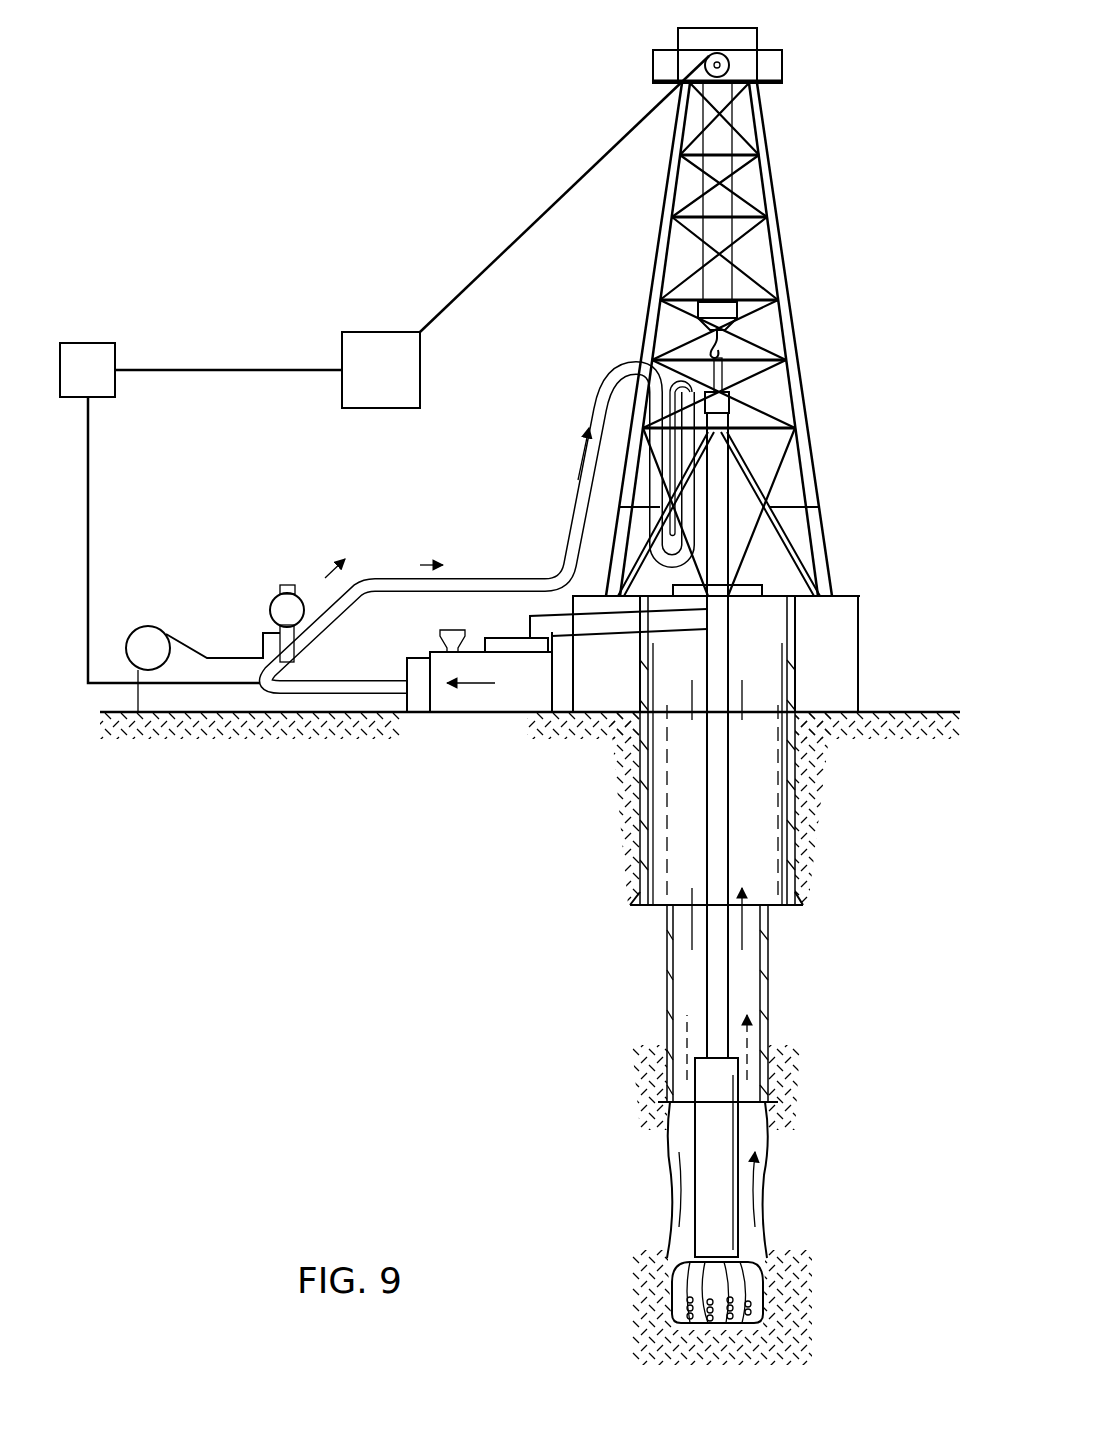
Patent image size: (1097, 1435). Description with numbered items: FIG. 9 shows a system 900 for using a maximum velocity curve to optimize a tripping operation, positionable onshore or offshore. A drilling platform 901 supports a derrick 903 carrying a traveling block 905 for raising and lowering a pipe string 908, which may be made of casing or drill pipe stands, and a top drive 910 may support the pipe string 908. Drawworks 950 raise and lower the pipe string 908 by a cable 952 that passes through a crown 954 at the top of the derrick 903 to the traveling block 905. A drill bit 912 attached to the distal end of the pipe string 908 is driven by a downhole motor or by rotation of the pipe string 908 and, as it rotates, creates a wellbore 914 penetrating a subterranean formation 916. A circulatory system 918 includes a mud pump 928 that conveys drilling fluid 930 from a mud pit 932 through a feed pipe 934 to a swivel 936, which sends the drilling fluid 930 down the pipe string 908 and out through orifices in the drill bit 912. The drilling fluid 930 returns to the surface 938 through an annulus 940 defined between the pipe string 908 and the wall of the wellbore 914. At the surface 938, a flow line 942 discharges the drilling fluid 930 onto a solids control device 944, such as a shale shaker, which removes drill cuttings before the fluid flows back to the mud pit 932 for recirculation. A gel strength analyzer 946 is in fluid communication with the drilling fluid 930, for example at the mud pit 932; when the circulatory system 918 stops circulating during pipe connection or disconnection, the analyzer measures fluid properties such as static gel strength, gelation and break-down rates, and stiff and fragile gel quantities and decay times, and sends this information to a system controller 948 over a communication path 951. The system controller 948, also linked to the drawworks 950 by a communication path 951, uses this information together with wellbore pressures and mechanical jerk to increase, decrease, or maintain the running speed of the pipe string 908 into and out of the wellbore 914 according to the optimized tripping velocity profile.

The system 900 is at (223, 85).
The crown 954 is at (757, 42).
The derrick 903 is at (794, 110).
The cable 952 is at (541, 174).
The traveling block 905 is at (740, 300).
The swivel 936 is at (735, 395).
The top drive 910 is at (745, 490).
The drilling platform 901 is at (830, 596).
The system controller 948 is at (80, 343).
The communication path 951 is at (227, 336).
The drawworks 950 is at (380, 332).
The feed pipe 934 is at (381, 577).
The solids control device 944 is at (490, 638).
The flow line 942 is at (565, 607).
The circulatory system 918 is at (155, 606).
The mud pump 928 is at (238, 658).
The gel strength analyzer 946 is at (418, 658).
The surface 938 is at (905, 712).
The drilling fluid 930 is at (470, 685).
The mud pit 932 is at (500, 705).
The subterranean formation 916 is at (365, 851).
The annulus 940 is at (662, 855).
The pipe string 908 is at (730, 850).
The wellbore 914 is at (766, 960).
The drill bit 912 is at (758, 1272).